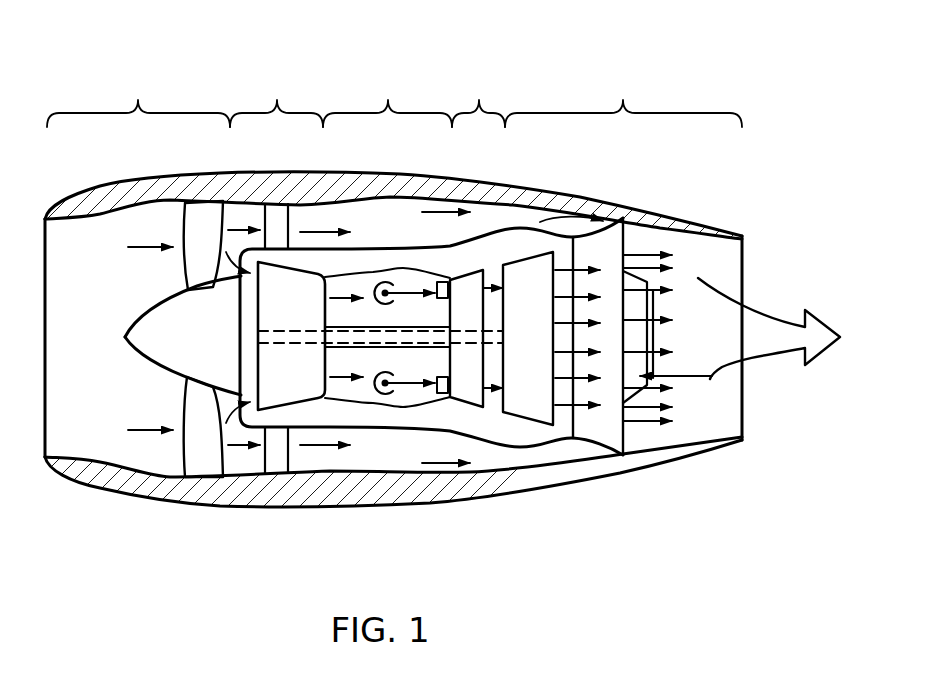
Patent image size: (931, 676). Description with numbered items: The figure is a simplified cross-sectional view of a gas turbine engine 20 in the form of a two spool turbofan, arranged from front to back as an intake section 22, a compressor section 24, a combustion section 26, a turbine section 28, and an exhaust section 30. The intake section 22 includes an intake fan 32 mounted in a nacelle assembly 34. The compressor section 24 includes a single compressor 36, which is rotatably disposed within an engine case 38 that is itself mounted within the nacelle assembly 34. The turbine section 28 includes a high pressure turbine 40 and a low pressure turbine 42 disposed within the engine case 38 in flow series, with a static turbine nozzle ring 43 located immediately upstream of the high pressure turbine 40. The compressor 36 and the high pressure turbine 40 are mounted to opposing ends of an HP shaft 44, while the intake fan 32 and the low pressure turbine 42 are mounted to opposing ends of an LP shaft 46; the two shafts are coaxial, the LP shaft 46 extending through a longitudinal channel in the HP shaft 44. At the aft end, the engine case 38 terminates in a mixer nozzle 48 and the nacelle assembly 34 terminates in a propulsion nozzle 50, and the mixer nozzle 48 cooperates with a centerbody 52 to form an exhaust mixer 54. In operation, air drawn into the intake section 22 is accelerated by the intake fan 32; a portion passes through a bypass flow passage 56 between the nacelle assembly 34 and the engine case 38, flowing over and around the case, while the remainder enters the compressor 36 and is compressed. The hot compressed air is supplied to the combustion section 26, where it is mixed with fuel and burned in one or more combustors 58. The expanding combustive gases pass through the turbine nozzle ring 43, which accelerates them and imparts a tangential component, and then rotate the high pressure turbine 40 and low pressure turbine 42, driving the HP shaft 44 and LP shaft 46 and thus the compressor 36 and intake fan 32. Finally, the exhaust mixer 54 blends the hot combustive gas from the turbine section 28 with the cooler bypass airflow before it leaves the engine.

The gas turbine engine 20 is at (489, 289).
The intake section 22 is at (138, 97).
The compressor section 24 is at (253, 272).
The combustion section 26 is at (387, 97).
The turbine section 28 is at (478, 97).
The exhaust section 30 is at (623, 97).
The intake fan 32 is at (182, 350).
The nacelle assembly 34 is at (195, 506).
The compressor 36 is at (273, 315).
The engine case 38 is at (390, 427).
The high pressure turbine 40 is at (470, 277).
The low pressure turbine 42 is at (545, 350).
The turbine nozzle ring 43 is at (443, 282).
The HP shaft 44 is at (373, 343).
The LP shaft 46 is at (272, 345).
The mixer nozzle 48 is at (603, 437).
The propulsion nozzle 50 is at (743, 256).
The centerbody 52 is at (636, 303).
The exhaust mixer 54 is at (710, 379).
The bypass flow passage 56 is at (393, 207).
The combustors 58 is at (385, 282).